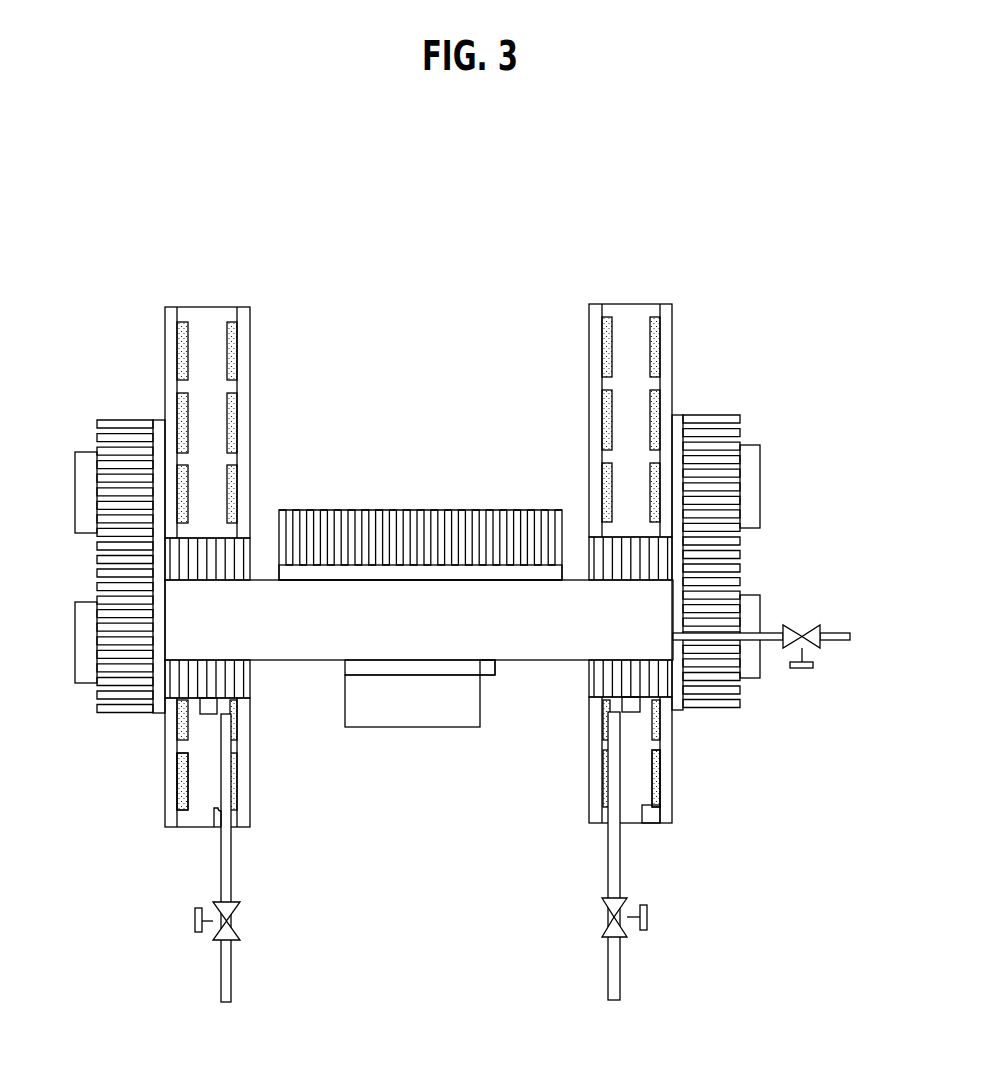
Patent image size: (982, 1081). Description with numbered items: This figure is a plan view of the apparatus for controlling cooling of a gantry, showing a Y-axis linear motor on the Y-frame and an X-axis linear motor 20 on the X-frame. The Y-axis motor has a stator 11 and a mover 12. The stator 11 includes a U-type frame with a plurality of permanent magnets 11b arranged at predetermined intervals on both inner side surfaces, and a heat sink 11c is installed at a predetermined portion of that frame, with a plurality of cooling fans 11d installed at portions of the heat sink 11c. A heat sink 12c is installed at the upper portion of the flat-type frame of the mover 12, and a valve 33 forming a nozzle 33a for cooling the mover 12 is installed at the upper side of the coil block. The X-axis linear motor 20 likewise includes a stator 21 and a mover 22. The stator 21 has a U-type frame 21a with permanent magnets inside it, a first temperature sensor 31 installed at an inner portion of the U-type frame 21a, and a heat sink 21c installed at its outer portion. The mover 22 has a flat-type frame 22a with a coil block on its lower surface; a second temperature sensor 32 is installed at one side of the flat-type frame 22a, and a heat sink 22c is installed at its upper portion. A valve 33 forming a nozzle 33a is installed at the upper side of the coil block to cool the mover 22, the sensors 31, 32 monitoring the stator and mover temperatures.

The stator 11 is at (260, 348).
The permanent magnets 11b is at (182, 800).
The heat sink 11c is at (129, 437).
The cooling fans 11d is at (88, 460).
The mover 12 is at (256, 686).
The heat sink 12c is at (240, 562).
The X-axis linear motor 20 is at (420, 504).
The stator 21 is at (452, 595).
The U-type frame 21a is at (365, 600).
The heat sink 21c is at (503, 510).
The mover 22 is at (417, 745).
The flat-type frame 22a is at (450, 668).
The heat sink 22c is at (400, 710).
The first temperature sensor 31 is at (215, 818).
The second temperature sensor 32 is at (212, 715).
The valve 33 is at (195, 923).
The nozzle 33a is at (228, 865).